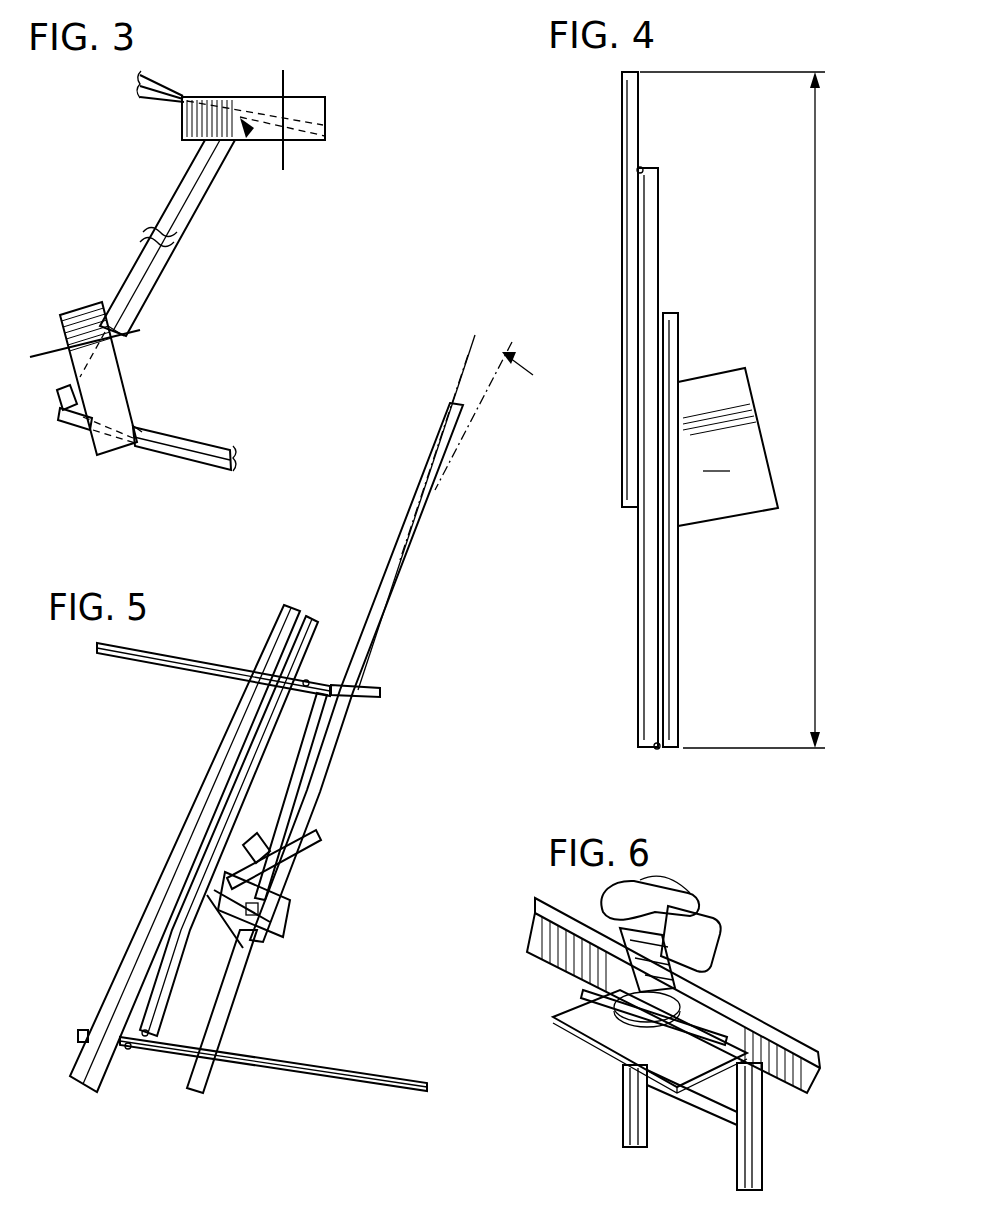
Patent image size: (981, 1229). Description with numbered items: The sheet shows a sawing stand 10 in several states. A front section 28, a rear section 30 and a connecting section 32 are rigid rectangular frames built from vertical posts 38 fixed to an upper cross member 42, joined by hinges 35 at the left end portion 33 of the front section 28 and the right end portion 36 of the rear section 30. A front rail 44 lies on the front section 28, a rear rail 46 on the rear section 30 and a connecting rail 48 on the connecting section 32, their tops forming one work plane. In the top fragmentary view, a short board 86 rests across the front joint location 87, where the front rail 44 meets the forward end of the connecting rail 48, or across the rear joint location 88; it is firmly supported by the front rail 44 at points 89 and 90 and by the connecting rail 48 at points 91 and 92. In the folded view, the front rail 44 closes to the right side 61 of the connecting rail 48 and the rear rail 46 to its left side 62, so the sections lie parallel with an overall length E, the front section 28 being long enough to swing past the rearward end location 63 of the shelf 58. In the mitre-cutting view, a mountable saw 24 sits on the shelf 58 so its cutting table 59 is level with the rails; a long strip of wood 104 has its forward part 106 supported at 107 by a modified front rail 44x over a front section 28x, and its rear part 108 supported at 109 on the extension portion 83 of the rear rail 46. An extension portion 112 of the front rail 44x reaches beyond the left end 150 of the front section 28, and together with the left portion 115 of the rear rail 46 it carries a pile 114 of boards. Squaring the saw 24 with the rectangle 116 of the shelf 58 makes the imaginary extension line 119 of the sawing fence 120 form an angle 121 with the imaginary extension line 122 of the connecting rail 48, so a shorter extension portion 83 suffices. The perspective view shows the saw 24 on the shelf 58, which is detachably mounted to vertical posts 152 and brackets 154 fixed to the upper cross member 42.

In FIG. 3, the sawing stand 10 is at (158, 208).
In FIG. 4, the sawing stand 10 is at (610, 100).
In FIG. 5, the sawing stand 10 is at (211, 650).
In FIG. 6, the sawing stand 10 is at (610, 1115).
In FIG. 5, the mountable saw 24 is at (282, 882).
In FIG. 6, the mountable saw 24 is at (700, 910).
In FIG. 4, the front section 28 is at (676, 632).
In FIG. 5, the front section 28x is at (370, 1091).
In FIG. 4, the rear section 30 is at (624, 150).
In FIG. 5, the rear section 30 is at (148, 656).
In FIG. 4, the connecting section 32 is at (658, 243).
In FIG. 5, the connecting section 32 is at (310, 788).
In FIG. 3, the left end portion of the front section 33 is at (70, 427).
In FIG. 4, the left end portion of the front section 33 is at (675, 730).
In FIG. 5, the left end portion of the front section 33 is at (127, 1048).
In FIG. 4, the hinges 35 is at (645, 168).
In FIG. 5, the hinges 35 is at (303, 682).
In FIG. 3, the right end portion of the rear section 36 is at (328, 122).
In FIG. 4, the right end portion of the rear section 36 is at (626, 215).
In FIG. 5, the right end portion of the rear section 36 is at (368, 683).
In FIG. 4, the vertical posts 38 is at (665, 322).
In FIG. 6, the upper cross member 42 is at (763, 1045).
In FIG. 3, the front rail 44 is at (183, 455).
In FIG. 4, the front rail 44 is at (670, 600).
In FIG. 5, the front rail 44x is at (380, 1088).
In FIG. 3, the rear rail 46 is at (176, 73).
In FIG. 4, the rear rail 46 is at (624, 123).
In FIG. 5, the rear rail 46 is at (133, 652).
In FIG. 3, the connecting rail 48 is at (148, 283).
In FIG. 4, the connecting rail 48 is at (650, 214).
In FIG. 5, the connecting rail 48 is at (287, 790).
In FIG. 6, the connecting rail 48 is at (733, 1023).
In FIG. 4, the shelf 58 is at (728, 447).
In FIG. 5, the shelf 58 is at (250, 950).
In FIG. 6, the shelf 58 is at (565, 1015).
In FIG. 5, the cutting table 59 is at (283, 856).
In FIG. 6, the cutting table 59 is at (610, 985).
In FIG. 4, the right side of the connecting rail 61 is at (658, 278).
In FIG. 4, the left side of the connecting rail 62 is at (638, 540).
In FIG. 4, the rearward end location of the shelf 63 is at (735, 368).
In FIG. 4, the extension portion of the rear rail 83 is at (640, 96).
In FIG. 5, the extension portion of the rear rail 83 is at (368, 700).
In FIG. 3, the short board 86 is at (325, 97).
In FIG. 3, the front joint location 87 is at (52, 418).
In FIG. 3, the rear joint location 88 is at (252, 140).
In FIG. 3, the support point on front rail 89 is at (140, 425).
In FIG. 3, the support point on front rail 90 is at (84, 425).
In FIG. 3, the support point on connecting rail 91 is at (112, 332).
In FIG. 3, the support point on connecting rail 92 is at (70, 372).
In FIG. 5, the long strip of wood 104 is at (328, 737).
In FIG. 5, the forward part of the long piece 106 is at (217, 1030).
In FIG. 5, the support point on front rail 107 is at (227, 1063).
In FIG. 5, the rear part of the long piece 108 is at (387, 600).
In FIG. 5, the support point on extension portion 109 is at (360, 680).
In FIG. 5, the extension portion of the front rail 112 is at (86, 1030).
In FIG. 5, the pile of boards 114 is at (156, 892).
In FIG. 5, the left portion of the rear rail 115 is at (163, 683).
In FIG. 5, the rectangle 116 is at (272, 915).
In FIG. 5, the imaginary extension line of the sawing fence 119 is at (463, 357).
In FIG. 5, the sawing fence 120 is at (257, 896).
In FIG. 5, the angle 121 is at (462, 330).
In FIG. 5, the imaginary extension line of the connecting rail 122 is at (487, 393).
In FIG. 5, the left end of the front section 150 is at (145, 1044).
In FIG. 6, the vertical posts 152 is at (737, 1157).
In FIG. 6, the brackets 154 is at (712, 1104).
In FIG. 4, the overall length E is at (815, 508).